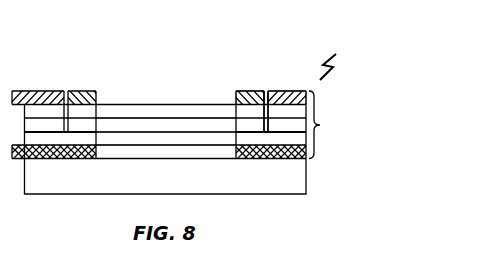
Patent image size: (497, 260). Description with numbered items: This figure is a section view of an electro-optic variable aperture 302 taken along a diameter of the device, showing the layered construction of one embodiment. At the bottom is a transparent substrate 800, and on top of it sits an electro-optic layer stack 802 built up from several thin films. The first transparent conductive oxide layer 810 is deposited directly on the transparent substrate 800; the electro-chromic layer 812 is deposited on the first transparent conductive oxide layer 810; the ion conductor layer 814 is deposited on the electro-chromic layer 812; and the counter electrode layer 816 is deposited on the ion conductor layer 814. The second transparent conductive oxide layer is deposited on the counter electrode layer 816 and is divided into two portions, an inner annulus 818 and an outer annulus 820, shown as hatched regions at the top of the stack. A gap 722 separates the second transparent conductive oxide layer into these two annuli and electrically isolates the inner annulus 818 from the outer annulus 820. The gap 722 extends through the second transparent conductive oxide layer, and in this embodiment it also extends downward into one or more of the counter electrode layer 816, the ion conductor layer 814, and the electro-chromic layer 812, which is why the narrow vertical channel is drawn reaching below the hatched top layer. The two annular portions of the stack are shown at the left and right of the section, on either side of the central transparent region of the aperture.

The transparent substrate 800 is at (308, 173).
The electro-optic layer stack 802 is at (331, 125).
The electro-optic variable aperture 302 is at (337, 57).
The first transparent conductive oxide layer 810 is at (236, 149).
The electro-chromic layer 812 is at (236, 134).
The ion conductor layer 814 is at (236, 119).
The counter electrode layer 816 is at (235, 106).
The second transparent conductive oxide layer inner annulus 818 is at (250, 90).
The second transparent conductive oxide layer outer annulus 820 is at (276, 90).
The gap 722 is at (267, 90).